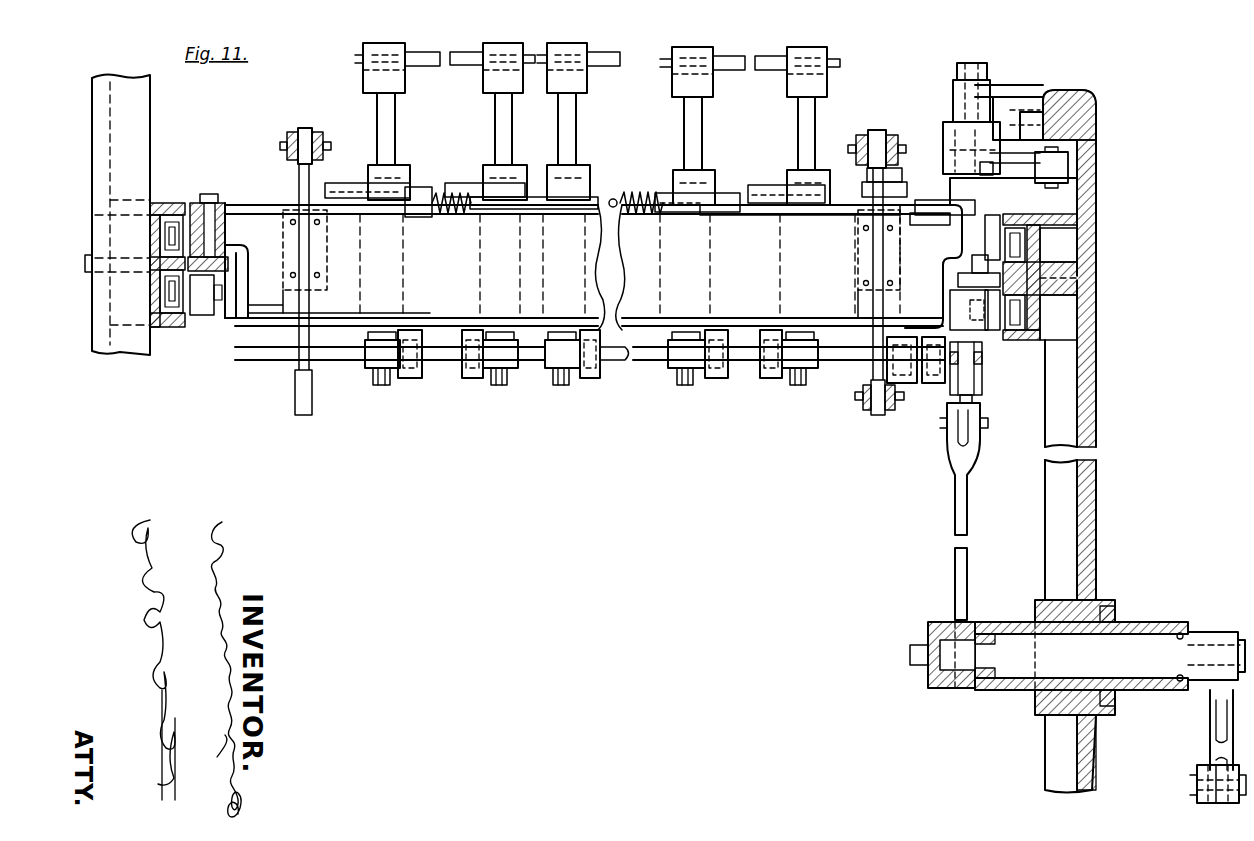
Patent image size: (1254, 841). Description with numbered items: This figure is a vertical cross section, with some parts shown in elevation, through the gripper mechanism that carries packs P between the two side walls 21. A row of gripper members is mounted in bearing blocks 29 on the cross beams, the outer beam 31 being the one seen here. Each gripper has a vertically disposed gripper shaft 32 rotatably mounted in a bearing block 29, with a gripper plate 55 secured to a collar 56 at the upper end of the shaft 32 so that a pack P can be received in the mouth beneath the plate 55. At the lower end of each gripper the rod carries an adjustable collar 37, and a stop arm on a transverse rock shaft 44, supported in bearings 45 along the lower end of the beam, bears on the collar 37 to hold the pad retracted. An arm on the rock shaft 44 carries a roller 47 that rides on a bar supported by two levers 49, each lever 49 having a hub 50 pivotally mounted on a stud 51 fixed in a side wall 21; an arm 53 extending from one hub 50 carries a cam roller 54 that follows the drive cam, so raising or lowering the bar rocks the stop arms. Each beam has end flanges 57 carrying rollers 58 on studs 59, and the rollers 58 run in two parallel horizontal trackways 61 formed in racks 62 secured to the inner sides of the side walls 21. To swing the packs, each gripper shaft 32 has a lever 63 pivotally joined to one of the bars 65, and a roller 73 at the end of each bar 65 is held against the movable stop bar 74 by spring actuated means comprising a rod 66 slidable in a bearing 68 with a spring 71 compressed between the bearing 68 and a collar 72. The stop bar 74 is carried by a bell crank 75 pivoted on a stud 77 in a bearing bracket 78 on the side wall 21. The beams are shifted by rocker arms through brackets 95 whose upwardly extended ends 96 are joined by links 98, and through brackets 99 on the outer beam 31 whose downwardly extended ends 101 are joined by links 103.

The side wall 21 is at (152, 138).
The bearing block 29 is at (405, 253).
The outer beam 31 is at (430, 318).
The gripper shaft 32 is at (397, 128).
The adjustable collar 37 is at (507, 372).
The rock shaft 44 is at (445, 362).
The bearing 45 is at (365, 360).
The roller 47 is at (410, 370).
The lever 49 is at (955, 488).
The hub 50 is at (940, 688).
The stud 51 is at (1018, 668).
The arm 53 is at (1208, 716).
The cam roller 54 is at (1205, 800).
The gripper plate 55 is at (565, 45).
The collar 56 is at (588, 90).
The end flange 57 is at (215, 318).
The roller 58 is at (158, 205).
The stud 59 is at (167, 235).
The horizontal trackway 61 is at (190, 205).
The rack 62 is at (183, 203).
The lever 63 is at (338, 183).
The bar 65 is at (752, 215).
The rod 66 is at (612, 198).
The bearing 68 is at (422, 188).
The spring 71 is at (636, 216).
The collar 72 is at (672, 212).
The roller 73 is at (862, 195).
The stop bar 74 is at (930, 213).
The bell crank 75 is at (943, 140).
The stud 77 is at (975, 65).
The bearing bracket 78 is at (997, 88).
The bracket 95 is at (283, 235).
The upwardly extended end 96 is at (306, 128).
The link 98 is at (288, 135).
The bracket 99 is at (283, 305).
The downwardly extended end 101 is at (298, 400).
The link 103 is at (862, 410).
The pack p is at (420, 50).